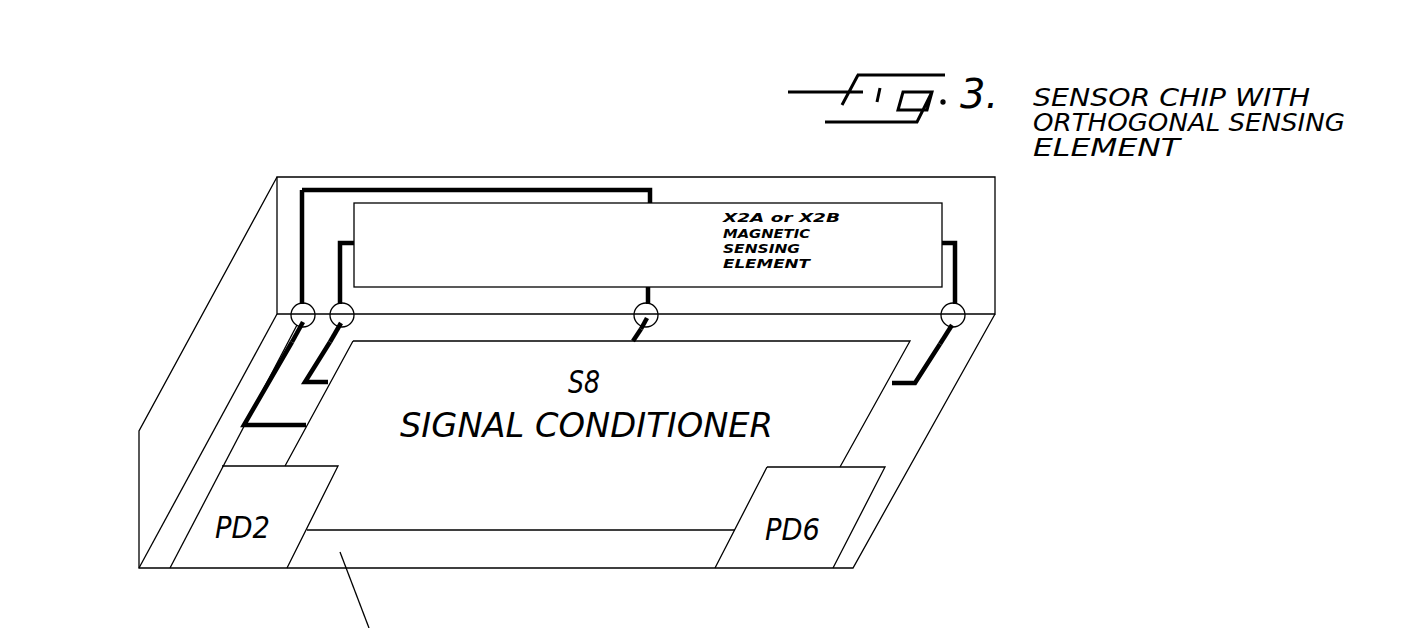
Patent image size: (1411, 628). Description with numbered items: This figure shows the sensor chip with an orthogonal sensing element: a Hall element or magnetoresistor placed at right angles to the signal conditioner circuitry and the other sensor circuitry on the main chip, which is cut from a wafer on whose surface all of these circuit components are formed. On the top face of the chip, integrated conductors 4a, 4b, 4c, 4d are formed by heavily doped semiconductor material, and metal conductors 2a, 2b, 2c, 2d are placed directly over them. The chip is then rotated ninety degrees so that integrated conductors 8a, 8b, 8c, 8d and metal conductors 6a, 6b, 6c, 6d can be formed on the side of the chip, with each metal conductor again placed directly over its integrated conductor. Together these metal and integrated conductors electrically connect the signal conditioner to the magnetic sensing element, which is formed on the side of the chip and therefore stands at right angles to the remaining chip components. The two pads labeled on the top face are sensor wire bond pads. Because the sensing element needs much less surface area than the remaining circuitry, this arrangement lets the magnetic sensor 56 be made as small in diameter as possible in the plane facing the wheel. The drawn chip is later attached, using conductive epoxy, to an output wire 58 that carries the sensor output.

The metal conductor 2a is at (331, 324).
The integrated conductor 4a is at (291, 323).
The metal conductor 6a is at (300, 302).
The integrated conductor 8a is at (294, 305).
The metal conductor 2b is at (334, 327).
The integrated conductor 4b is at (290, 326).
The metal conductor 6b is at (340, 302).
The integrated conductor 8b is at (333, 306).
The metal conductor 2c is at (633, 328).
The integrated conductor 4c is at (632, 318).
The metal conductor 6c is at (648, 293).
The integrated conductor 8c is at (653, 310).
The metal conductor 2d is at (927, 367).
The integrated conductor 4d is at (962, 323).
The metal conductor 6d is at (957, 285).
The integrated conductor 8d is at (966, 308).
The magnetic sensor 56 is at (1252, 627).
The output wire 58 is at (963, 621).